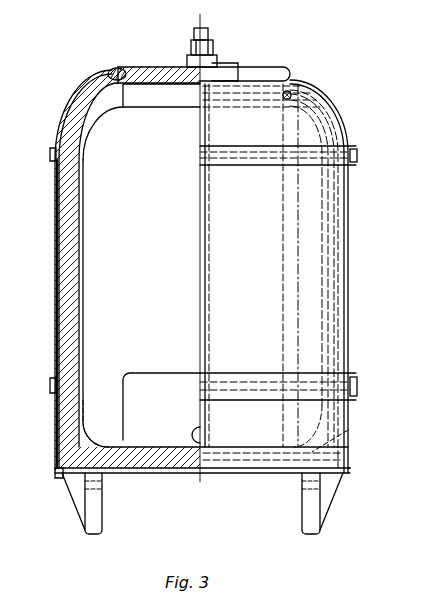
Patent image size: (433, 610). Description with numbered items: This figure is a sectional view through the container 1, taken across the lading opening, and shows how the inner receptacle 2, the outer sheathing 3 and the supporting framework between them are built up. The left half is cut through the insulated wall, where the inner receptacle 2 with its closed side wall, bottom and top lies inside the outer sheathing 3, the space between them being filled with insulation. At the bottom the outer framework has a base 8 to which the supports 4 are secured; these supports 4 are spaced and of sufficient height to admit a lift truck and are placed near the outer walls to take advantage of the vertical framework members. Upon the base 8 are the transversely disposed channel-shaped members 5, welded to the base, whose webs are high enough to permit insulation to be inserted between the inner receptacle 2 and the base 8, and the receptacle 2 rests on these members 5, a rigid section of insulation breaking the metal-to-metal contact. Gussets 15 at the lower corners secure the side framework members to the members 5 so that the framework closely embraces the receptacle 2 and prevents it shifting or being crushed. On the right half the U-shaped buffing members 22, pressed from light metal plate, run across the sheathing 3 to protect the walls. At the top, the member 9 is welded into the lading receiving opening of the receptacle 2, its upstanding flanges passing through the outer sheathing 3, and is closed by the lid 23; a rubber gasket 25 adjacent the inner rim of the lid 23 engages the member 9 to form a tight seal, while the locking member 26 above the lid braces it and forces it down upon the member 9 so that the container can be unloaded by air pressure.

The container 1 is at (58, 119).
The inner receptacle 2 is at (72, 198).
The outer sheathing 3 is at (62, 277).
The supports 4 is at (104, 508).
The transversely disposed spaced members 5 is at (97, 443).
The base 8 is at (197, 471).
The member fitted in top opening 9 is at (126, 92).
The gussets 15 is at (84, 427).
The buffing members 22 is at (265, 168).
The lid 23 is at (146, 86).
The rubber gasket 25 is at (122, 70).
The locking member 26 is at (194, 37).